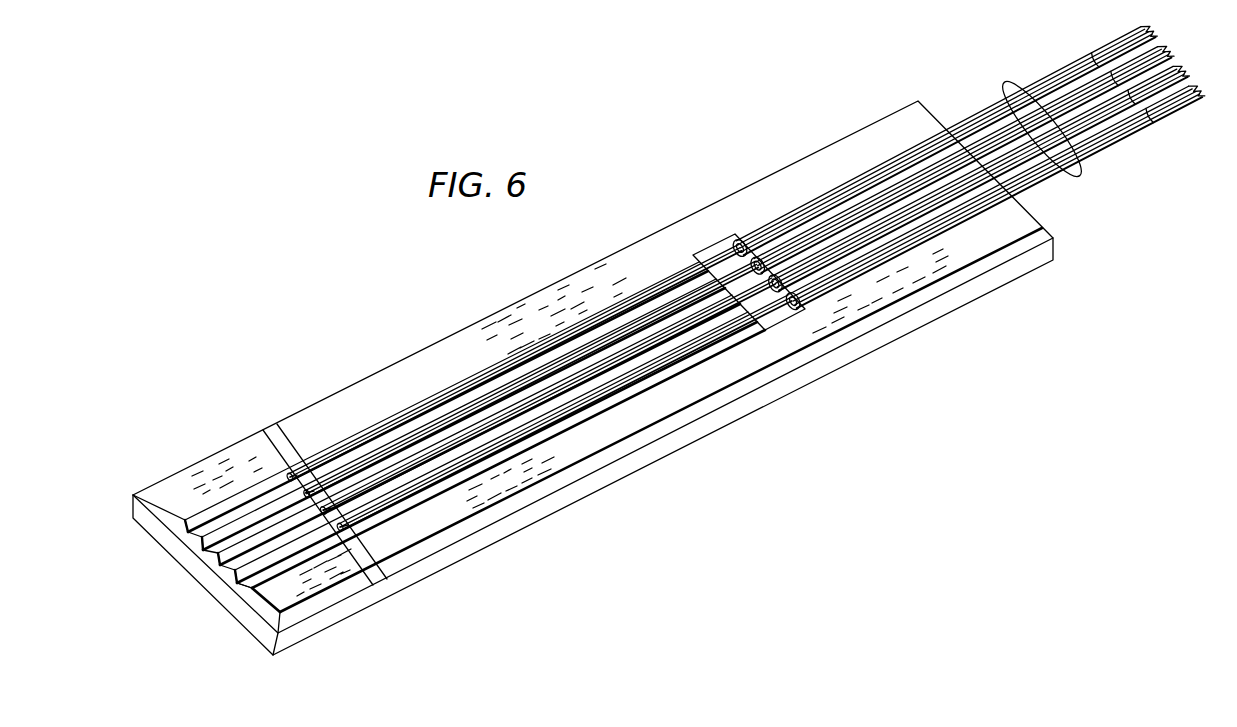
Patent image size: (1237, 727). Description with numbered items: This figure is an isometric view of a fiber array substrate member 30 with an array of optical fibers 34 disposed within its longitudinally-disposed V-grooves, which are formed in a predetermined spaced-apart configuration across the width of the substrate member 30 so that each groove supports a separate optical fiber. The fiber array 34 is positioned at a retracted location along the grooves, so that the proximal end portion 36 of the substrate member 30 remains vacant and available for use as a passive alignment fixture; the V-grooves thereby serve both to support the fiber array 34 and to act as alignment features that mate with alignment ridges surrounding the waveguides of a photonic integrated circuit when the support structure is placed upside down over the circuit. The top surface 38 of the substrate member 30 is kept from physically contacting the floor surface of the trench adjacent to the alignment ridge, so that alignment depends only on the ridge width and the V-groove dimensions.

The fiber array substrate member 30 is at (818, 378).
The array of optical fibers 34 is at (1003, 84).
The proximal end portion 36 is at (305, 612).
The top surface 38 is at (553, 452).